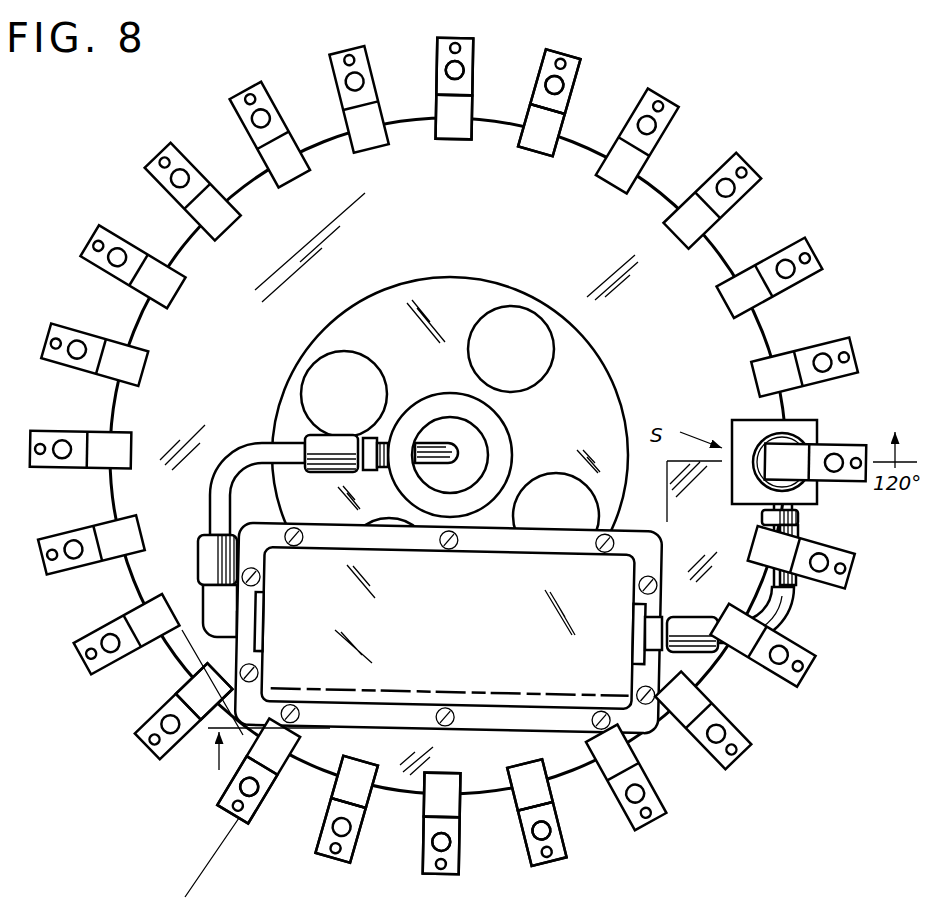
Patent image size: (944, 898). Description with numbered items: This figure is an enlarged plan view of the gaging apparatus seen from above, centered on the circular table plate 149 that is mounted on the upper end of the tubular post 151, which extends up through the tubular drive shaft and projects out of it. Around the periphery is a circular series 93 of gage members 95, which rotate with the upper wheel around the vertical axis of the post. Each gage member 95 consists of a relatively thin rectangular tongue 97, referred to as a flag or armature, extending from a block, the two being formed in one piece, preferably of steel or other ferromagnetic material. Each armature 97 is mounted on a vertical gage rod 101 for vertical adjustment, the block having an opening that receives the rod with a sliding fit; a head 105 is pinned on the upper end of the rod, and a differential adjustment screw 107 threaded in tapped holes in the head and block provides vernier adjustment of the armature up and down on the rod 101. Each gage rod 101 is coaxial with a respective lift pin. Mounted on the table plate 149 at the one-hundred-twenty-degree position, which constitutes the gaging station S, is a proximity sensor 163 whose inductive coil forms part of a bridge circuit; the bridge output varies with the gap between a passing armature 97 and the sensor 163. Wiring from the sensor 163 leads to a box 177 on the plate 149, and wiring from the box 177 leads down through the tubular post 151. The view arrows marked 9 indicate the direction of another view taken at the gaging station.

The circular series of gage members 93 is at (150, 749).
The gage member 95 is at (96, 238).
The tongue (armature) 97 is at (519, 146).
The gage rod 101 is at (545, 84).
The head 105 is at (547, 50).
The differential adjustment screw 107 is at (797, 859).
The circular table plate 149 is at (722, 240).
The tubular post 151 is at (500, 438).
The proximity sensor 163 is at (750, 420).
The box 177 is at (457, 641).
The view direction of FIG. 9 is at (562, 588).